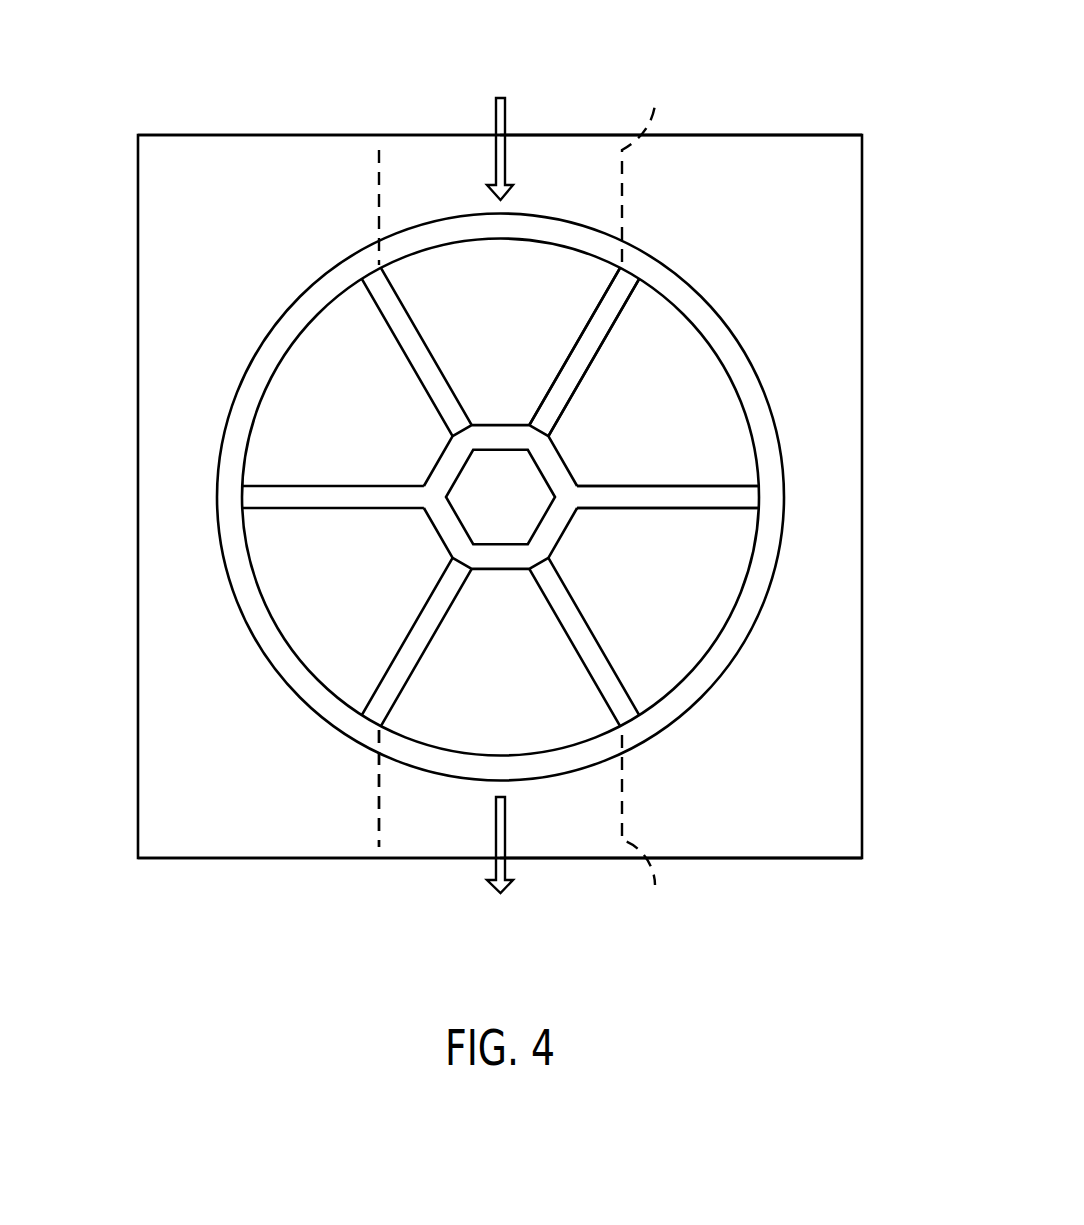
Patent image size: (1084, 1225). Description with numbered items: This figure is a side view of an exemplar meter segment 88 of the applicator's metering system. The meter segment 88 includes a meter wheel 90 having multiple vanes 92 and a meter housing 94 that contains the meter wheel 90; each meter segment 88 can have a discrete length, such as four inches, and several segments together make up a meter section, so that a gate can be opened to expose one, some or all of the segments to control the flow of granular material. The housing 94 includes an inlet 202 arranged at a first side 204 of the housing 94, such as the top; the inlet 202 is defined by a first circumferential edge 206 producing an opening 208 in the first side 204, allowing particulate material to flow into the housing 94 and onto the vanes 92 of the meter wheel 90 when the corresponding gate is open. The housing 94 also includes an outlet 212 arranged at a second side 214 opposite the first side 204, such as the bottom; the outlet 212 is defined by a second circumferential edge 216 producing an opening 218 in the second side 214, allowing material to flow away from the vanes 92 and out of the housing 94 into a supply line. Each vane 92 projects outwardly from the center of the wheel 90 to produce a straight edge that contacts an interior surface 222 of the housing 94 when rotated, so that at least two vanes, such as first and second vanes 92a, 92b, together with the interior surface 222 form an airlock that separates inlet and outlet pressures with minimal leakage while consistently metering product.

The meter segment 88 is at (152, 85).
The meter wheel 90 is at (390, 448).
The vanes 92 is at (293, 498).
The first vane 92a is at (590, 343).
The second vane 92b is at (687, 498).
The meter housing 94 is at (822, 228).
The inlet 202 is at (421, 68).
The first side 204 is at (733, 135).
The first circumferential edge 206 is at (648, 168).
The opening 208 is at (430, 172).
The outlet 212 is at (423, 888).
The second side 214 is at (733, 858).
The second circumferential edge 216 is at (650, 826).
The opening 218 is at (432, 820).
The interior surface 222 is at (700, 333).